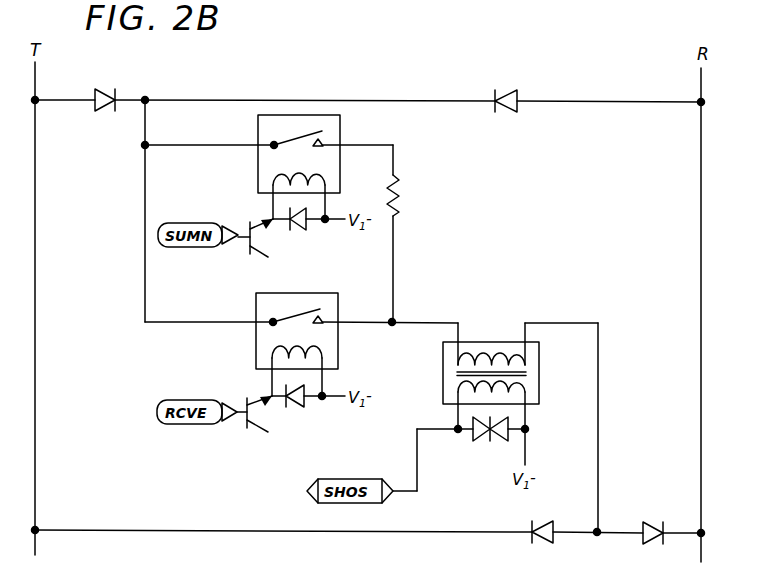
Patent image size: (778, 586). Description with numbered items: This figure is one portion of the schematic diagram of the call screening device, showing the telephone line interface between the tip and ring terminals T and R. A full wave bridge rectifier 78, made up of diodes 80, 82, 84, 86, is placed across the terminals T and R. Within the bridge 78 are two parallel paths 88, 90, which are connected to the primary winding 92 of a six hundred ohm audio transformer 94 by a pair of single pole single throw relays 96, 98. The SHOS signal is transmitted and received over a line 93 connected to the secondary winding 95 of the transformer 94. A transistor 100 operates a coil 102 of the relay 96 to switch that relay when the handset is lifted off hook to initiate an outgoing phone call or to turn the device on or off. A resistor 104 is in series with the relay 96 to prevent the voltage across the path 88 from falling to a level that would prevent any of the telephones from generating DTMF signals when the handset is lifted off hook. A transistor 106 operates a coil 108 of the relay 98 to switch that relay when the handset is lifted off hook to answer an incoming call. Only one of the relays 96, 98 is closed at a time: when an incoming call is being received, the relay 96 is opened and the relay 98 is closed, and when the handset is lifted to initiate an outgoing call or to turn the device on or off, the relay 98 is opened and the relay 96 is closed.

The full wave bridge rectifier 78 is at (462, 88).
The diode 80 is at (104, 92).
The diode 82 is at (525, 66).
The diode 84 is at (541, 522).
The diode 86 is at (672, 502).
The parallel path 88 is at (204, 146).
The parallel path 90 is at (142, 204).
The primary winding 92 is at (471, 340).
The line 93 is at (418, 472).
The audio transformer 94 is at (520, 402).
The secondary winding 95 is at (539, 386).
The relay 96 is at (340, 137).
The relay 98 is at (256, 341).
The transistor 100 is at (246, 248).
The coil 102 is at (325, 182).
The resistor 104 is at (400, 182).
The transistor 106 is at (244, 428).
The coil 108 is at (322, 350).